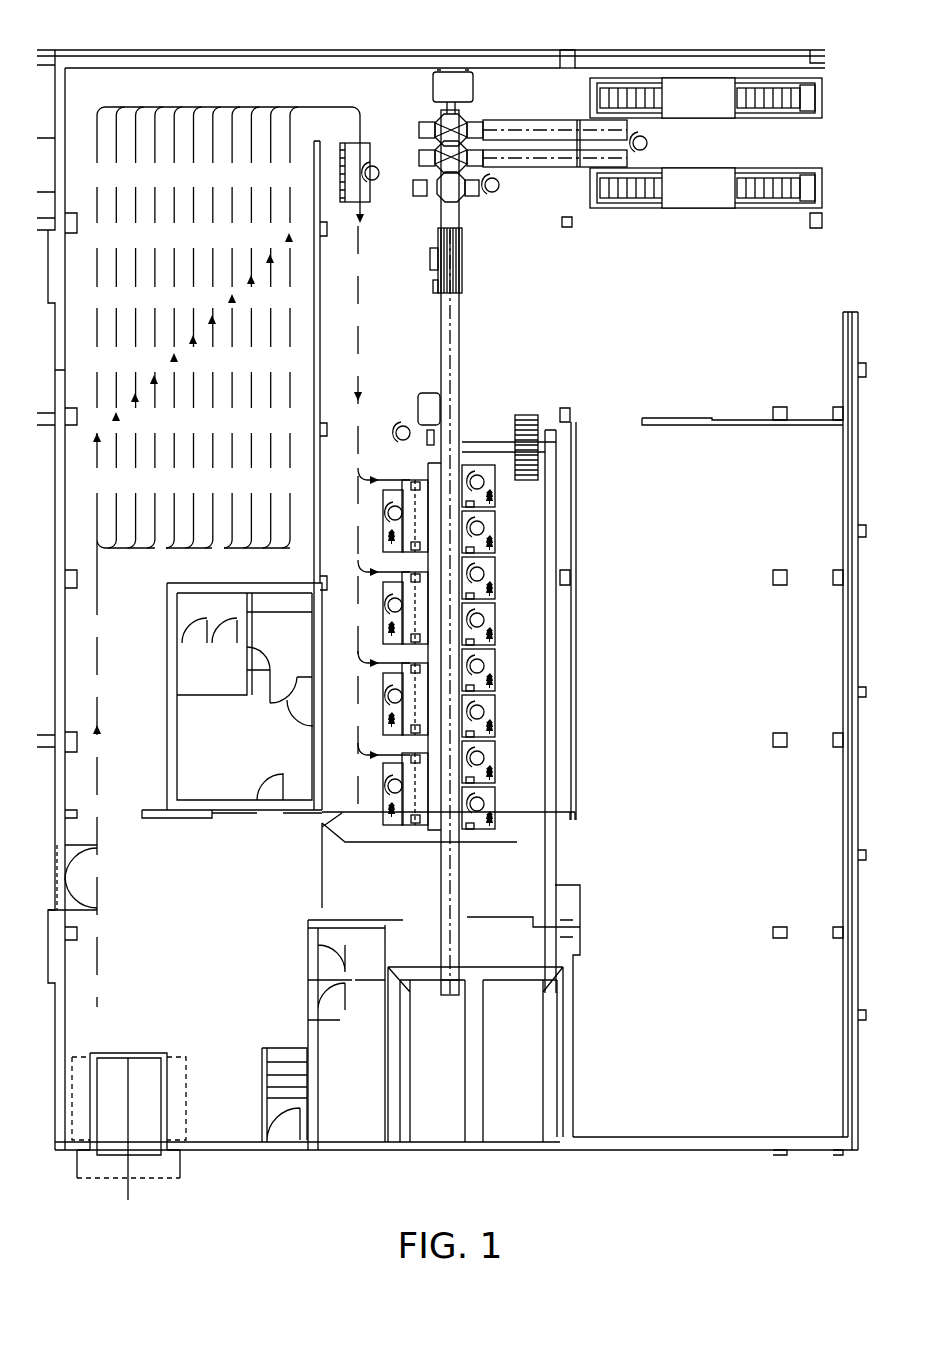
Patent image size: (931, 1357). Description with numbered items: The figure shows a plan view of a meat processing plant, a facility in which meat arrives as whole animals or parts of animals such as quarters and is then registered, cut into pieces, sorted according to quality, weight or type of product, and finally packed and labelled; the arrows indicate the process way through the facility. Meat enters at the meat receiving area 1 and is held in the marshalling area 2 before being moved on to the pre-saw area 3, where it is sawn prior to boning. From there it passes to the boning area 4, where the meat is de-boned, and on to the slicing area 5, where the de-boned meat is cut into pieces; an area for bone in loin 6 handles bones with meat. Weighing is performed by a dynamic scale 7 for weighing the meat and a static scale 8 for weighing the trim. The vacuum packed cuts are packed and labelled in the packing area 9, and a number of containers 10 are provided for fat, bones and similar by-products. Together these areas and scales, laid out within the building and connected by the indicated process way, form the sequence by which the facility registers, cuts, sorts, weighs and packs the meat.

The meat receiving area 1 is at (216, 1030).
The marshalling area 2 is at (205, 222).
The pre-saw area 3 is at (365, 150).
The boning area 4 is at (383, 522).
The slicing area 5 is at (488, 522).
The area for bone in loin 6 is at (448, 405).
The dynamic scale 7 is at (463, 260).
The static scale 8 is at (492, 173).
The packing area 9 is at (677, 90).
The containers 10 is at (533, 1030).